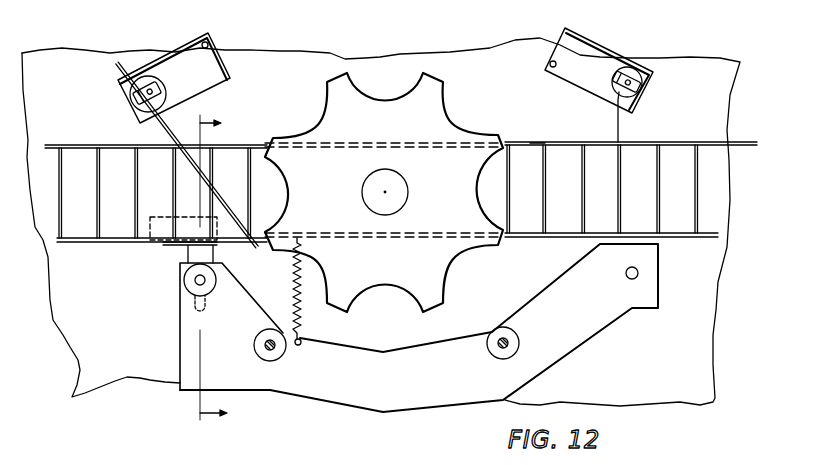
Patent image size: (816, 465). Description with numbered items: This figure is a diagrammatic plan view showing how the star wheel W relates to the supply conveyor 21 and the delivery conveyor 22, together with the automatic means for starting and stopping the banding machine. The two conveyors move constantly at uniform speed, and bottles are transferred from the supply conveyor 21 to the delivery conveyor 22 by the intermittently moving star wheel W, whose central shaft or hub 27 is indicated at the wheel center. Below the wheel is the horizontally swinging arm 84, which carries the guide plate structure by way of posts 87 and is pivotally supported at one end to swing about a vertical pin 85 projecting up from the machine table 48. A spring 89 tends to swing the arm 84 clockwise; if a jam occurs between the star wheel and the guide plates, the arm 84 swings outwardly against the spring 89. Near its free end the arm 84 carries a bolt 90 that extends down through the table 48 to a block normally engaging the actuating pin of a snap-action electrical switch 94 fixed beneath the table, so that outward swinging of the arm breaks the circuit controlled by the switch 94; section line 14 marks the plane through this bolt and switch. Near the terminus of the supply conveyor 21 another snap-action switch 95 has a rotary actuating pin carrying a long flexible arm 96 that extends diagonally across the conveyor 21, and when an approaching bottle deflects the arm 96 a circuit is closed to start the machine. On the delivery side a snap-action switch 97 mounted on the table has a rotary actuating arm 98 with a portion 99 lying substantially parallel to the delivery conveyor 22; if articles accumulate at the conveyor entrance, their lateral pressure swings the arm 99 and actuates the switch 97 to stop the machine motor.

The section line 14 is at (198, 267).
The supply conveyor 21 is at (118, 228).
The delivery conveyor 22 is at (558, 232).
The wheel shaft 27 is at (403, 188).
The machine table 48 is at (680, 393).
The horizontally swinging arm 84 is at (473, 400).
The vertical pin 85 is at (638, 273).
The posts 87 is at (274, 352).
The spring 89 is at (300, 317).
The bolt 90 is at (199, 281).
The snap-action electrical switch 94 is at (190, 225).
The snap-action electrical switch 95 is at (213, 62).
The flexible arm 96 is at (160, 114).
The snap-action switch 97 is at (595, 55).
The actuating arm 98 is at (622, 132).
The arm portion 99 is at (537, 143).
The star wheel W is at (433, 122).